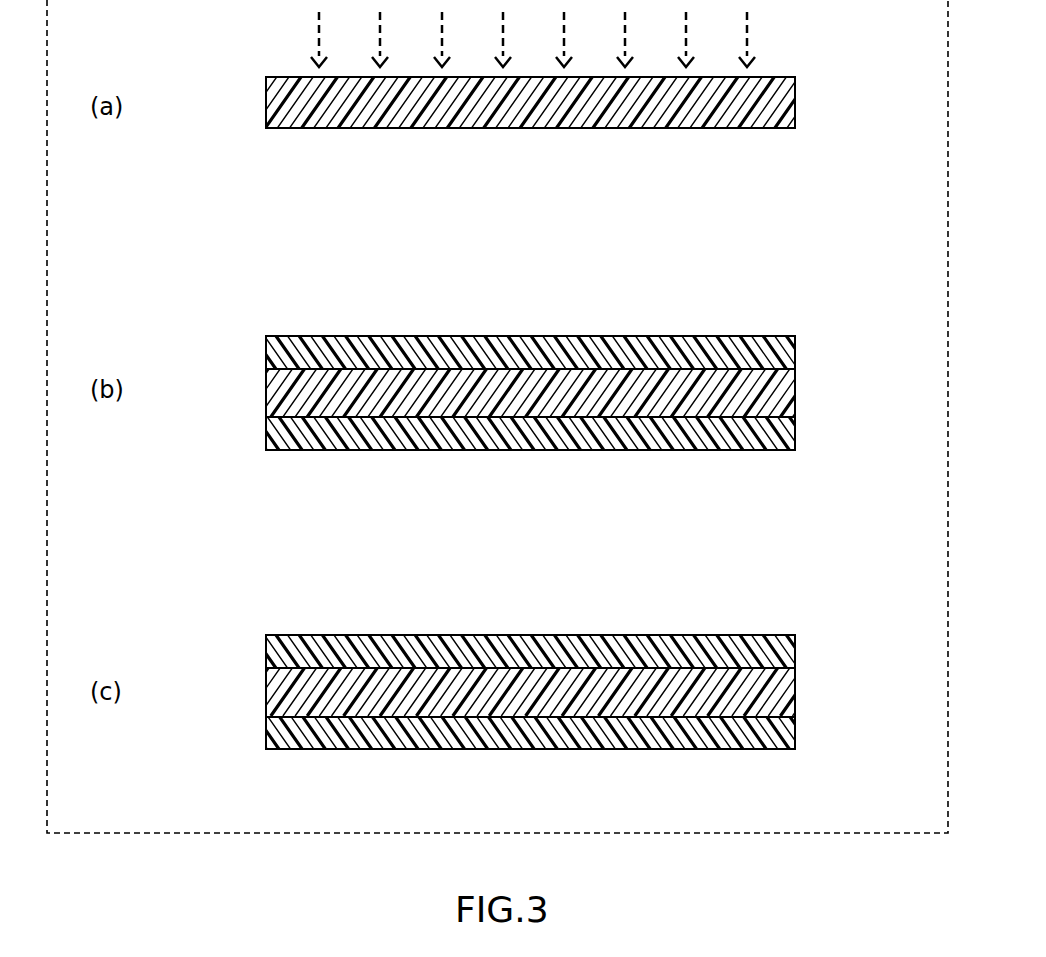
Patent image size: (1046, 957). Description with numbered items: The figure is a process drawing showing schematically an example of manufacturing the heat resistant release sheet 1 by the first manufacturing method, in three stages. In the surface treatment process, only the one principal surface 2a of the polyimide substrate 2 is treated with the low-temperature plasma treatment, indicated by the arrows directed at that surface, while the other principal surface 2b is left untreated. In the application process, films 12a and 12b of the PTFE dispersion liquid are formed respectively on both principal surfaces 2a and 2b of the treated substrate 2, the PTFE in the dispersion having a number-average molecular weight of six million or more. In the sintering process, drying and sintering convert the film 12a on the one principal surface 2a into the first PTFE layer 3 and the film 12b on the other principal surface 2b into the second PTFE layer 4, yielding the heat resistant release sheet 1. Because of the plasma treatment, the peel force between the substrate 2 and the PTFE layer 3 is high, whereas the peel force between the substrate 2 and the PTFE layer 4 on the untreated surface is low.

The heat resistant release sheet 1 is at (800, 622).
The polyimide substrate 2 is at (786, 108).
The one principal surface 2a is at (300, 96).
The other principal surface 2b is at (298, 108).
The film of PTFE dispersion liquid 12a is at (773, 358).
The film of PTFE dispersion liquid 12b is at (773, 438).
The first PTFE layer 3 is at (773, 657).
The second PTFE layer 4 is at (773, 737).